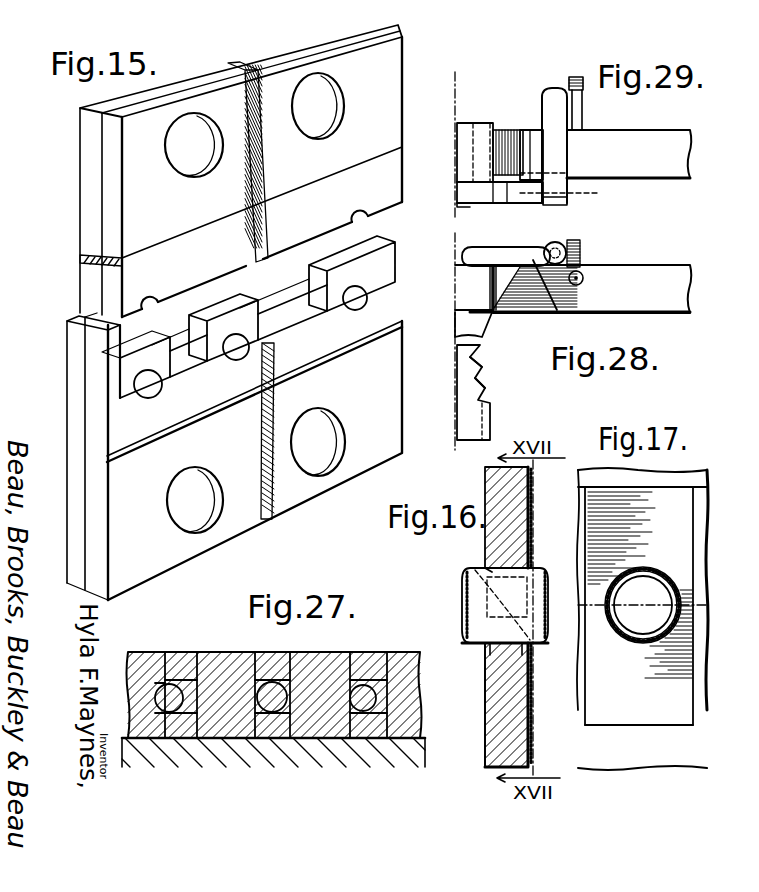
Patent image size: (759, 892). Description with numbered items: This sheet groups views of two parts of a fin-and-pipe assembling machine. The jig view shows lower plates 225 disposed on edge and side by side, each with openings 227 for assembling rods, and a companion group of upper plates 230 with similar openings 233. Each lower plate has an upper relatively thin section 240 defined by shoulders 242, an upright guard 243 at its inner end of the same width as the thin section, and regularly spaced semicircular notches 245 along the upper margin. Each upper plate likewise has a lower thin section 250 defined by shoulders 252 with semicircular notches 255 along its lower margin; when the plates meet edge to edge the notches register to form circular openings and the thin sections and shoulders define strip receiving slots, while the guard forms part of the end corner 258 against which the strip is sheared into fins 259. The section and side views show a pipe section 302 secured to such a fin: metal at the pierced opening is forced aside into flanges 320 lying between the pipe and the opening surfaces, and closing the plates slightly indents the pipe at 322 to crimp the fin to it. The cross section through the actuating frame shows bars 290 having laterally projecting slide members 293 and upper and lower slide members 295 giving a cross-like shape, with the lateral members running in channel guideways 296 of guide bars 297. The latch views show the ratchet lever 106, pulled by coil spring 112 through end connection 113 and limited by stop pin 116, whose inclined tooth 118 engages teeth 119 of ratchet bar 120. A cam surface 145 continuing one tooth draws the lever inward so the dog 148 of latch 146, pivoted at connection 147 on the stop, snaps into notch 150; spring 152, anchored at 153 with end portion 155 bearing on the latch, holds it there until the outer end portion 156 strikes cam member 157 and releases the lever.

In FIG. 29, the ratchet lever 106 is at (660, 178).
In FIG. 28, the ratchet lever 106 is at (665, 268).
In FIG. 29, the coil spring 112 is at (578, 77).
In FIG. 29, the end connection 113 is at (584, 92).
In FIG. 29, the stop lug or pin 116 is at (555, 149).
In FIG. 28, the inclined tooth 118 is at (480, 330).
In FIG. 28, the teeth 119 is at (481, 380).
In FIG. 29, the ratchet bar 120 is at (462, 126).
In FIG. 28, the ratchet bar 120 is at (471, 357).
In FIG. 28, the cam surface 145 is at (523, 308).
In FIG. 29, the latch 146 is at (566, 203).
In FIG. 28, the latch 146 is at (560, 312).
In FIG. 29, the pivotal connection 147 is at (574, 191).
In FIG. 29, the offset dog or arm 148 is at (530, 167).
In FIG. 28, the offset dog or arm 148 is at (505, 270).
In FIG. 29, the notch 150 is at (500, 143).
In FIG. 28, the notch 150 is at (510, 282).
In FIG. 28, the spring 152 is at (523, 250).
In FIG. 28, the anchored end 153 is at (556, 250).
In FIG. 28, the end portion 155 is at (510, 256).
In FIG. 29, the outer end portion 156 is at (468, 192).
In FIG. 28, the outer end portion 156 is at (462, 255).
In FIG. 29, the cam member 157 is at (462, 207).
In FIG. 28, the cam member 157 is at (465, 411).
In FIG. 15, the lower plates 225 is at (77, 553).
In FIG. 16, the lower plates 225 is at (493, 760).
In FIG. 17, the lower plates 225 is at (695, 750).
In FIG. 15, the openings 227 is at (191, 482).
In FIG. 15, the upper plates 230 is at (107, 143).
In FIG. 16, the upper plates 230 is at (507, 477).
In FIG. 17, the upper plates 230 is at (695, 485).
In FIG. 15, the openings 233 is at (180, 172).
In FIG. 15, the upper thin section 240 is at (297, 340).
In FIG. 15, the shoulders 242 is at (107, 460).
In FIG. 16, the shoulders 242 is at (490, 718).
In FIG. 17, the shoulders 242 is at (694, 724).
In FIG. 15, the upright guard 243 is at (100, 321).
In FIG. 15, the semicircular notches 245 is at (145, 378).
In FIG. 16, the semicircular notches 245 is at (487, 617).
In FIG. 17, the semicircular notches 245 is at (670, 607).
In FIG. 15, the lower thin section 250 is at (196, 278).
In FIG. 15, the shoulders 252 is at (92, 262).
In FIG. 15, the semicircular notches 255 is at (355, 215).
In FIG. 16, the semicircular notches 255 is at (490, 568).
In FIG. 15, the end corner 258 is at (108, 362).
In FIG. 16, the fins 259 is at (531, 682).
In FIG. 17, the fins 259 is at (677, 682).
In FIG. 27, the bars 290 is at (248, 660).
In FIG. 27, the slide members 293 is at (282, 685).
In FIG. 27, the upper and lower slide members 295 is at (222, 660).
In FIG. 27, the channel guideways 296 is at (160, 655).
In FIG. 27, the guide bars 297 is at (188, 656).
In FIG. 16, the pipe section 302 is at (465, 581).
In FIG. 17, the pipe section 302 is at (679, 590).
In FIG. 16, the flanges 320 is at (498, 646).
In FIG. 16, the indentation 322 is at (533, 548).
In FIG. 17, the indentation 322 is at (672, 606).